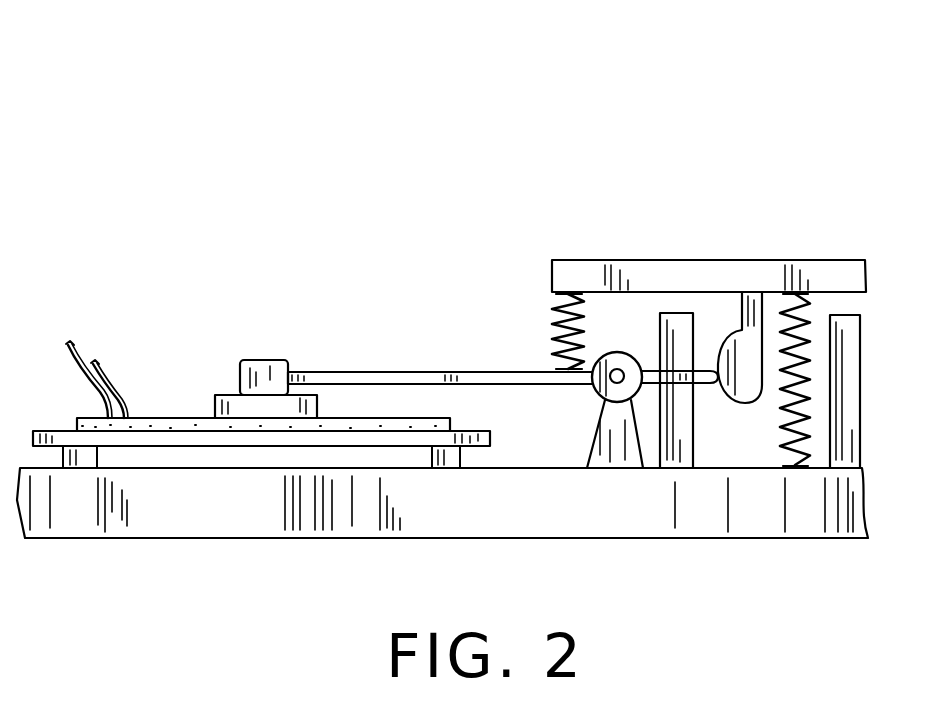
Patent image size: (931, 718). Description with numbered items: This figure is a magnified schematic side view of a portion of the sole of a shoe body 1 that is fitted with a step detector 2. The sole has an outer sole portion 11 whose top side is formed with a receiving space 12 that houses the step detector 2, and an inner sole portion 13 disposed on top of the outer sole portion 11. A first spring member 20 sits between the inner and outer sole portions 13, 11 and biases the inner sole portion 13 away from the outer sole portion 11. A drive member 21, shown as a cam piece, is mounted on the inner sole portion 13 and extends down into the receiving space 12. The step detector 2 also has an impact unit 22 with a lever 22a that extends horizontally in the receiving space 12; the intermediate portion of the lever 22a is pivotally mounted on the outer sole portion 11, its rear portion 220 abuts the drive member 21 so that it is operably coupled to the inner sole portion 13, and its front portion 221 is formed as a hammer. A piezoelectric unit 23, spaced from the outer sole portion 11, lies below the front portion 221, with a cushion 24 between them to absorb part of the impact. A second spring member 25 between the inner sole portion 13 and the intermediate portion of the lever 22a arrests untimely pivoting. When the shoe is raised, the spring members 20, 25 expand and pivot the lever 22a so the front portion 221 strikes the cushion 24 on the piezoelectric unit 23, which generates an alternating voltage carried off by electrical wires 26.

The shoe body 1 is at (191, 118).
The step detector 2 is at (505, 345).
The outer sole portion 11 is at (800, 525).
The receiving space 12 is at (478, 455).
The inner sole portion 13 is at (752, 270).
The first spring member 20 is at (805, 309).
The drive member 21 is at (722, 350).
The impact unit 22 is at (528, 378).
The lever 22a is at (404, 371).
The piezoelectric unit 23 is at (440, 420).
The cushion 24 is at (215, 403).
The second spring member 25 is at (554, 336).
The electrical wires 26 is at (118, 378).
The rear portion 220 is at (712, 400).
The front portion 221 is at (288, 366).